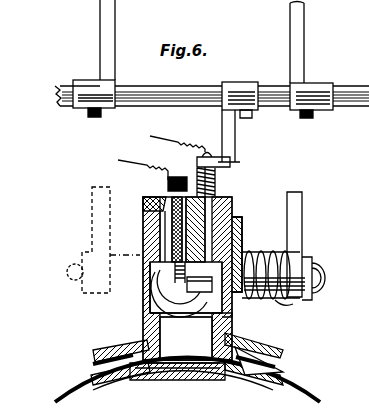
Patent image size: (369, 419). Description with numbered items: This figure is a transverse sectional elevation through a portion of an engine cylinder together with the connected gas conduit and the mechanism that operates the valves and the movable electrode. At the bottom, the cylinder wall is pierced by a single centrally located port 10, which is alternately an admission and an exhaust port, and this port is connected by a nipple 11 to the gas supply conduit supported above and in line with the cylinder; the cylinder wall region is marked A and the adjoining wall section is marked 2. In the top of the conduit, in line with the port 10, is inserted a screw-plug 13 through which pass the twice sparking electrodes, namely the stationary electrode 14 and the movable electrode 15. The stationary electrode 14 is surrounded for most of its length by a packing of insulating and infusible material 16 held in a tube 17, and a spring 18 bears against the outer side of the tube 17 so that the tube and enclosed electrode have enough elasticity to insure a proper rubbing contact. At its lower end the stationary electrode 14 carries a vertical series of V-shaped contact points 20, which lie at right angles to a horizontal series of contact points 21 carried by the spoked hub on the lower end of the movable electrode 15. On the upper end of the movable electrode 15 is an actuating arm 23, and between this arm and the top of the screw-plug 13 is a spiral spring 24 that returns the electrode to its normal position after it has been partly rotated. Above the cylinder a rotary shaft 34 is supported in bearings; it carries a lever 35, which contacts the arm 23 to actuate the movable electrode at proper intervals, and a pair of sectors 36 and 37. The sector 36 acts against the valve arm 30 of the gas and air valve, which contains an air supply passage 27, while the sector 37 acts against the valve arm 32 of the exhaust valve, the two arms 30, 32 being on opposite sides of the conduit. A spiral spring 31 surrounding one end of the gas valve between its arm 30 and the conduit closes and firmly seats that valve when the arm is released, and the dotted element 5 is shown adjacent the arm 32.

The rotary shaft 34 is at (154, 90).
The sector 37 is at (103, 49).
The sector 36 is at (311, 60).
The lever 35 is at (238, 122).
The actuating arm 23 is at (225, 168).
The spiral spring 24 is at (216, 186).
The screw-plug 13 is at (230, 204).
The insulating and infusible material 16 is at (160, 206).
The spring 18 is at (160, 246).
The stationary electrode 14 is at (176, 272).
The tube 17 is at (162, 190).
The movable electrode 15 is at (233, 223).
The spiral spring 31 is at (273, 269).
The valve arm 30 is at (307, 244).
The air supply passage 27 is at (282, 268).
The valve arm 32 is at (93, 224).
The pin 5 is at (75, 272).
The contact points 20 is at (158, 283).
The nipple 11 is at (186, 336).
The contact points 21 is at (228, 323).
The port 10 is at (180, 370).
The wheel flange A is at (118, 354).
The flange 2 is at (258, 371).